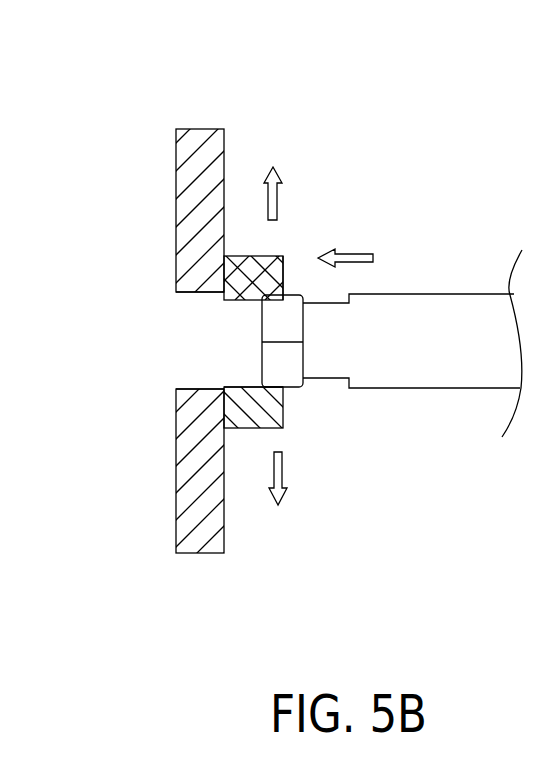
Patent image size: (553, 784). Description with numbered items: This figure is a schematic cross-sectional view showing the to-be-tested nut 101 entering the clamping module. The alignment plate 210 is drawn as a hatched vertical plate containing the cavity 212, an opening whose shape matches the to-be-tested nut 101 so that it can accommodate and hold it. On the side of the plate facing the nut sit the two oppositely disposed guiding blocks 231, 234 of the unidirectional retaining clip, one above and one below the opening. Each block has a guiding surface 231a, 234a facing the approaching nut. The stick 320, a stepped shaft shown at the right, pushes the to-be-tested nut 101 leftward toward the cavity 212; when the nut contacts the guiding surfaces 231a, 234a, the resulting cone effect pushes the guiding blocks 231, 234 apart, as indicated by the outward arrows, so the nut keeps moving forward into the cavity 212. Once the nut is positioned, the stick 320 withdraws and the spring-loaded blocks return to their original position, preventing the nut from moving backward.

The alignment plate 210 is at (200, 129).
The cavity 212 is at (153, 313).
The guiding block 231 is at (252, 272).
The guiding surface 231a is at (283, 256).
The guiding block 234 is at (252, 428).
The guiding surface 234a is at (262, 372).
The to-be-tested nut 101 is at (270, 324).
The stick 320 is at (440, 380).